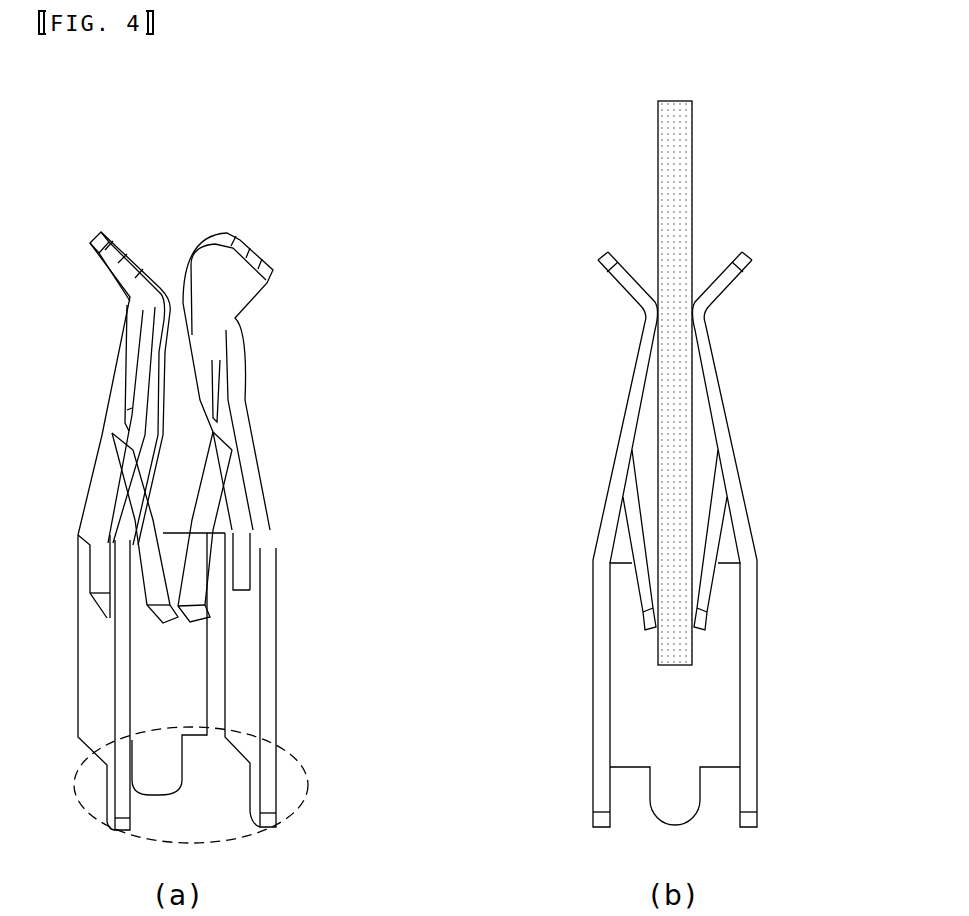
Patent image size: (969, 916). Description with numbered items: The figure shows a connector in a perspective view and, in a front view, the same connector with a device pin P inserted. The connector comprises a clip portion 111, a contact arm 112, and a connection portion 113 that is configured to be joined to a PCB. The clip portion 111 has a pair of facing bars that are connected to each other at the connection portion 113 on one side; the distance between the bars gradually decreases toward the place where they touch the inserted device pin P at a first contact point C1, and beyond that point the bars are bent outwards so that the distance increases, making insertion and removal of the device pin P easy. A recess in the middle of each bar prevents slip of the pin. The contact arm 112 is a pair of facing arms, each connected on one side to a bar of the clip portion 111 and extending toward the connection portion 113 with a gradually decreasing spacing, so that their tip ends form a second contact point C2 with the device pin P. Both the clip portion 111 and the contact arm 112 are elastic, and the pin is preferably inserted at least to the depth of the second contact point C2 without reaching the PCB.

The clip portion 111 is at (230, 363).
The contact arm 112 is at (214, 567).
The connection portion 113 is at (310, 768).
The device pin P is at (696, 134).
The first contact point C1 is at (722, 322).
The second contact point C2 is at (772, 626).